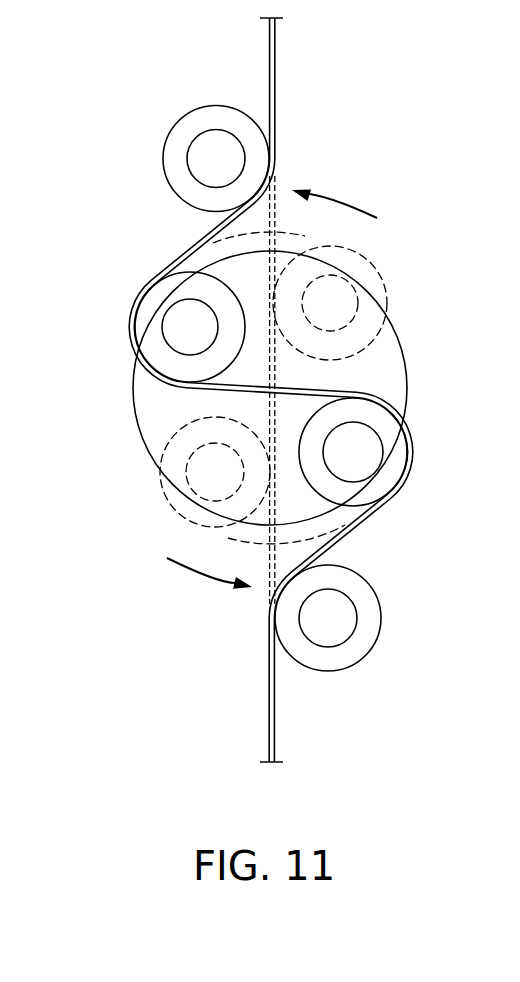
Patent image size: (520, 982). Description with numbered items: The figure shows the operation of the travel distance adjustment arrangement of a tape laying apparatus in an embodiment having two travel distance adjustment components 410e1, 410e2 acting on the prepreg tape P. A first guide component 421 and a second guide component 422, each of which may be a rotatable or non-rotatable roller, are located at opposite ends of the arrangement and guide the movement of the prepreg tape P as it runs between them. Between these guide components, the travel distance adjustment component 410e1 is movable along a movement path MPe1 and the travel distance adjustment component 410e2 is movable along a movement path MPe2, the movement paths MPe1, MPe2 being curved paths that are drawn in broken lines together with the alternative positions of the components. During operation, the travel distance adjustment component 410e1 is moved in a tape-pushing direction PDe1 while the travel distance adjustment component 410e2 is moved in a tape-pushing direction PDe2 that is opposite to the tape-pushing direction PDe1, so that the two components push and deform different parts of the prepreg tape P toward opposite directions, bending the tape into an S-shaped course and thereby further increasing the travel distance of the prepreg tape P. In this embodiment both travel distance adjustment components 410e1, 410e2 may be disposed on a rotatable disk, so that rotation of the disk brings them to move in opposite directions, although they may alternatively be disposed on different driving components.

The prepreg tape P is at (273, 74).
The first guide component 421 is at (168, 157).
The second guide component 422 is at (381, 619).
The travel distance adjustment component 410e1 is at (293, 288).
The travel distance adjustment component 410e2 is at (247, 488).
The movement path MPe1 is at (305, 236).
The movement path MPe2 is at (228, 538).
The tape-pushing direction PDe1 is at (341, 195).
The tape-pushing direction PDe2 is at (203, 583).